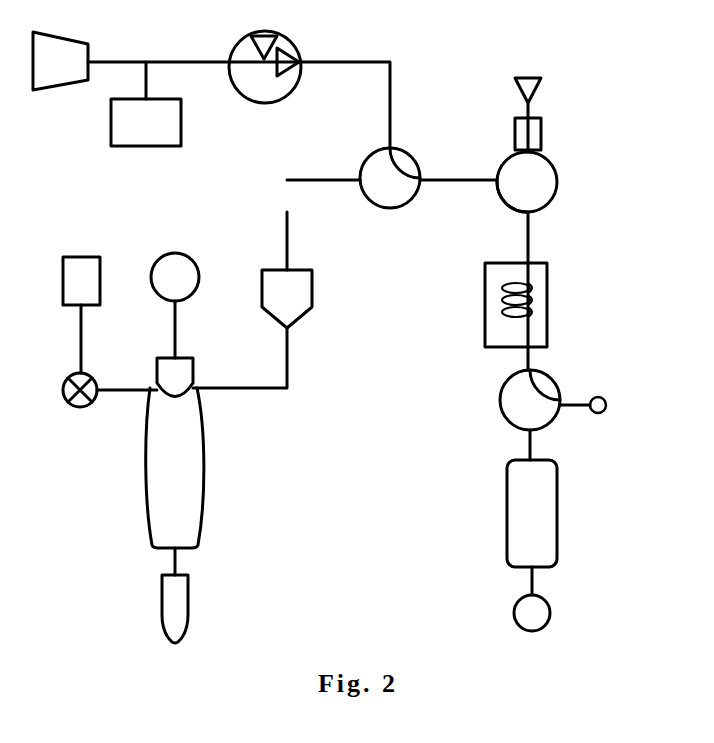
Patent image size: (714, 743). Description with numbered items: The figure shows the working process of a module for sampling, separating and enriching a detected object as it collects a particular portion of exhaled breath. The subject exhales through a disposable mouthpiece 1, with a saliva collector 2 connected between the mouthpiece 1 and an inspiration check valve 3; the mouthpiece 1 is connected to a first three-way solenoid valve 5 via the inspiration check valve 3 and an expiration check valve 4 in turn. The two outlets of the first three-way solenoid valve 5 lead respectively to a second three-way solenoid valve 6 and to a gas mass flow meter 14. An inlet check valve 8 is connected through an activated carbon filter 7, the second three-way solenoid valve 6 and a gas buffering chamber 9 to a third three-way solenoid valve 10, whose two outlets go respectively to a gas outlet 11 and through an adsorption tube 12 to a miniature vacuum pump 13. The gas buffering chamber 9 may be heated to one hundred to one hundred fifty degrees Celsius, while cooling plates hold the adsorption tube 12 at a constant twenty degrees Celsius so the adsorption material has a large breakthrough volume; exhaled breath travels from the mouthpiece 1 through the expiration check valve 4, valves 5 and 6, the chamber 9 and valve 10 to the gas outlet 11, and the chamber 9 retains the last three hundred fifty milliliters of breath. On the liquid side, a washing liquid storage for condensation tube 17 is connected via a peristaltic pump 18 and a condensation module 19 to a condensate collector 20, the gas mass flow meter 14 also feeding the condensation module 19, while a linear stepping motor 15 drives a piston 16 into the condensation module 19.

The mouthpiece 1 is at (60, 61).
The saliva collector 2 is at (146, 122).
The inspiration check valve 3 is at (254, 38).
The expiration check valve 4 is at (290, 52).
The first three-way solenoid valve 5 is at (390, 178).
The second three-way solenoid valve 6 is at (527, 182).
The activated carbon filter 7 is at (541, 132).
The inlet check valve 8 is at (515, 90).
The gas buffering chamber 9 is at (527, 305).
The third three-way solenoid valve 10 is at (530, 400).
The gas outlet 11 is at (599, 406).
The adsorption tube 12 is at (532, 513).
The miniature vacuum pump 13 is at (547, 613).
The gas mass flow meter 14 is at (287, 299).
The linear stepping motor 15 is at (175, 277).
The piston 16 is at (177, 372).
The washing liquid storage for condensation tube 17 is at (81, 281).
The peristaltic pump 18 is at (61, 390).
The condensation module 19 is at (175, 468).
The condensate collector 20 is at (191, 609).